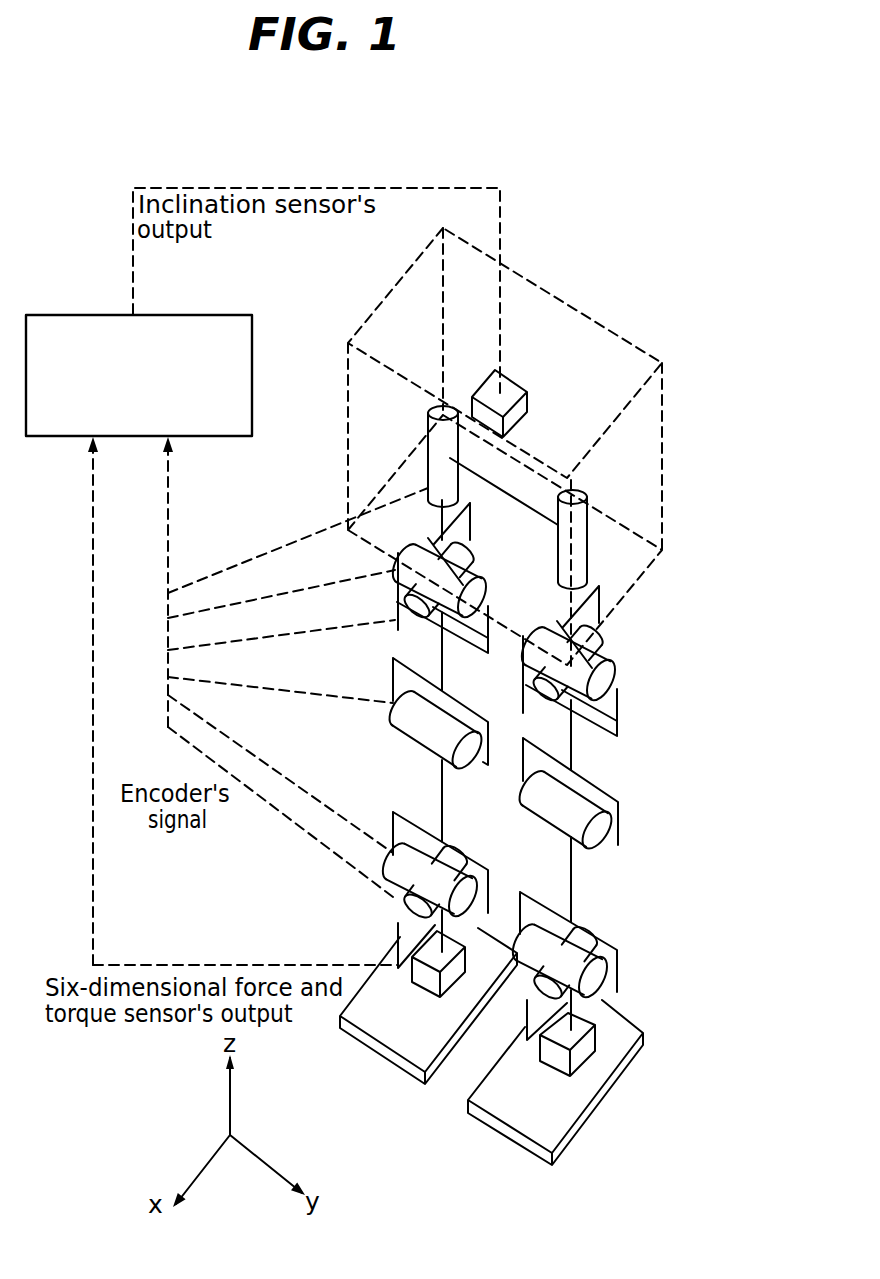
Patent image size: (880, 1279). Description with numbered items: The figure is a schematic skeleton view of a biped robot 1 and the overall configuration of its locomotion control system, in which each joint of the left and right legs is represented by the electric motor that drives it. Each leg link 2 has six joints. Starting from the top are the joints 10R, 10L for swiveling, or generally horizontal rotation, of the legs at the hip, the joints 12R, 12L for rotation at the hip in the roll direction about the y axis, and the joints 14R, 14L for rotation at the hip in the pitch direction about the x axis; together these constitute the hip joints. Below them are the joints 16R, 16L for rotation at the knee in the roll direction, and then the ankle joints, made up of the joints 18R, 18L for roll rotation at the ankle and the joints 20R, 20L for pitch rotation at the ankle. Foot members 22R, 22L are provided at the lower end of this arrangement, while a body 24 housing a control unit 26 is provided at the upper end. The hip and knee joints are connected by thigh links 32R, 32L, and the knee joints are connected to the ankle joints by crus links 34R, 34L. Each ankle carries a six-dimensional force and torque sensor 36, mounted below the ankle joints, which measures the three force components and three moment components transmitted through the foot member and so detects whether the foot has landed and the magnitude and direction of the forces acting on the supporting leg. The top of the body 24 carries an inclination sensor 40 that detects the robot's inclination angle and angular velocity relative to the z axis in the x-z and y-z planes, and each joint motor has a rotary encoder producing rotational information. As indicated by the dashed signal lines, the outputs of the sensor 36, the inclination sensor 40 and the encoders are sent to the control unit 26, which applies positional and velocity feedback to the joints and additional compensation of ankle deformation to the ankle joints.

The biped robot 1 is at (608, 650).
The leg link 2 is at (614, 796).
The hip swiveling joint (right) 10R is at (441, 486).
The hip swiveling joint (left) 10L is at (578, 556).
The hip roll joint (right) 12R is at (478, 595).
The hip roll joint (left) 12L is at (612, 677).
The hip pitch joint (right) 14R is at (472, 549).
The hip pitch joint (left) 14L is at (608, 633).
The knee roll joint (right) 16R is at (470, 770).
The knee roll joint (left) 16L is at (588, 848).
The ankle roll joint (right) 18R is at (477, 937).
The ankle roll joint (left) 18L is at (603, 992).
The ankle pitch joint (right) 20R is at (463, 848).
The ankle pitch joint (left) 20L is at (596, 929).
The foot member (right) 22R is at (407, 1042).
The foot member (left) 22L is at (568, 1113).
The body 24 is at (547, 287).
The control unit 26 is at (217, 314).
The thigh link (right) 32R is at (443, 664).
The thigh link (left) 32L is at (574, 741).
The crus link (right) 34R is at (442, 803).
The crus link (left) 34L is at (571, 880).
The six-dimensional force and torque sensor 36 is at (427, 977).
The inclination sensor 40 is at (514, 388).